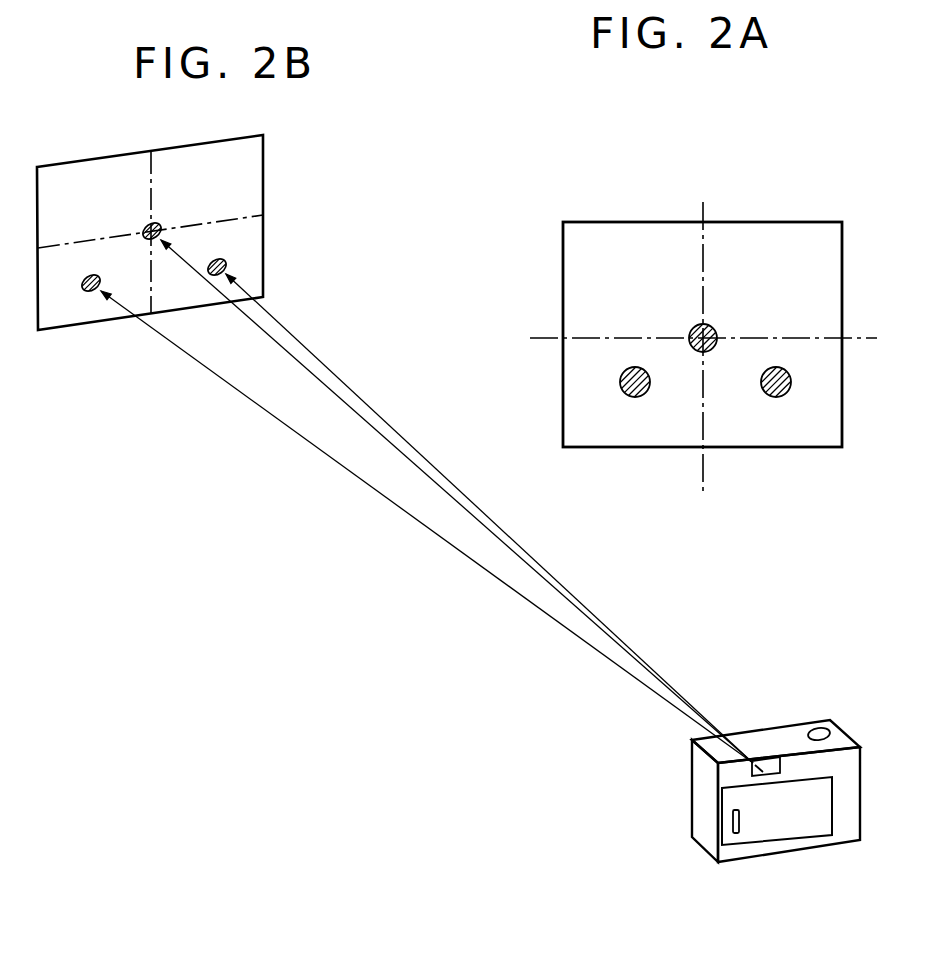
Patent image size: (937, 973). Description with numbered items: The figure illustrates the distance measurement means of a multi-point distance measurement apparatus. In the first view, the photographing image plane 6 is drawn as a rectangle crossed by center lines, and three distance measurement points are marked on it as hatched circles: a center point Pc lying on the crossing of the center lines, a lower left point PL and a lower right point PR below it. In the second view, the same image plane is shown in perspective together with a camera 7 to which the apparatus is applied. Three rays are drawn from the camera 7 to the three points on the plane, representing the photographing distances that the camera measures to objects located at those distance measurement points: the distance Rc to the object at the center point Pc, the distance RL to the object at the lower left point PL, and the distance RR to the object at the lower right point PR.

In FIG. 2A, the photographing image plane 6 is at (822, 277).
In FIG. 2B, the camera 7 is at (760, 743).
In FIG. 2A, the center distance measurement point Pc is at (705, 325).
In FIG. 2A, the lower left distance measurement point PL is at (628, 397).
In FIG. 2A, the lower right distance measurement point PR is at (773, 395).
In FIG. 2B, the photographing distance to center point Rc is at (270, 337).
In FIG. 2B, the photographing distance to lower left point RL is at (230, 385).
In FIG. 2B, the photographing distance to lower right point RR is at (338, 382).